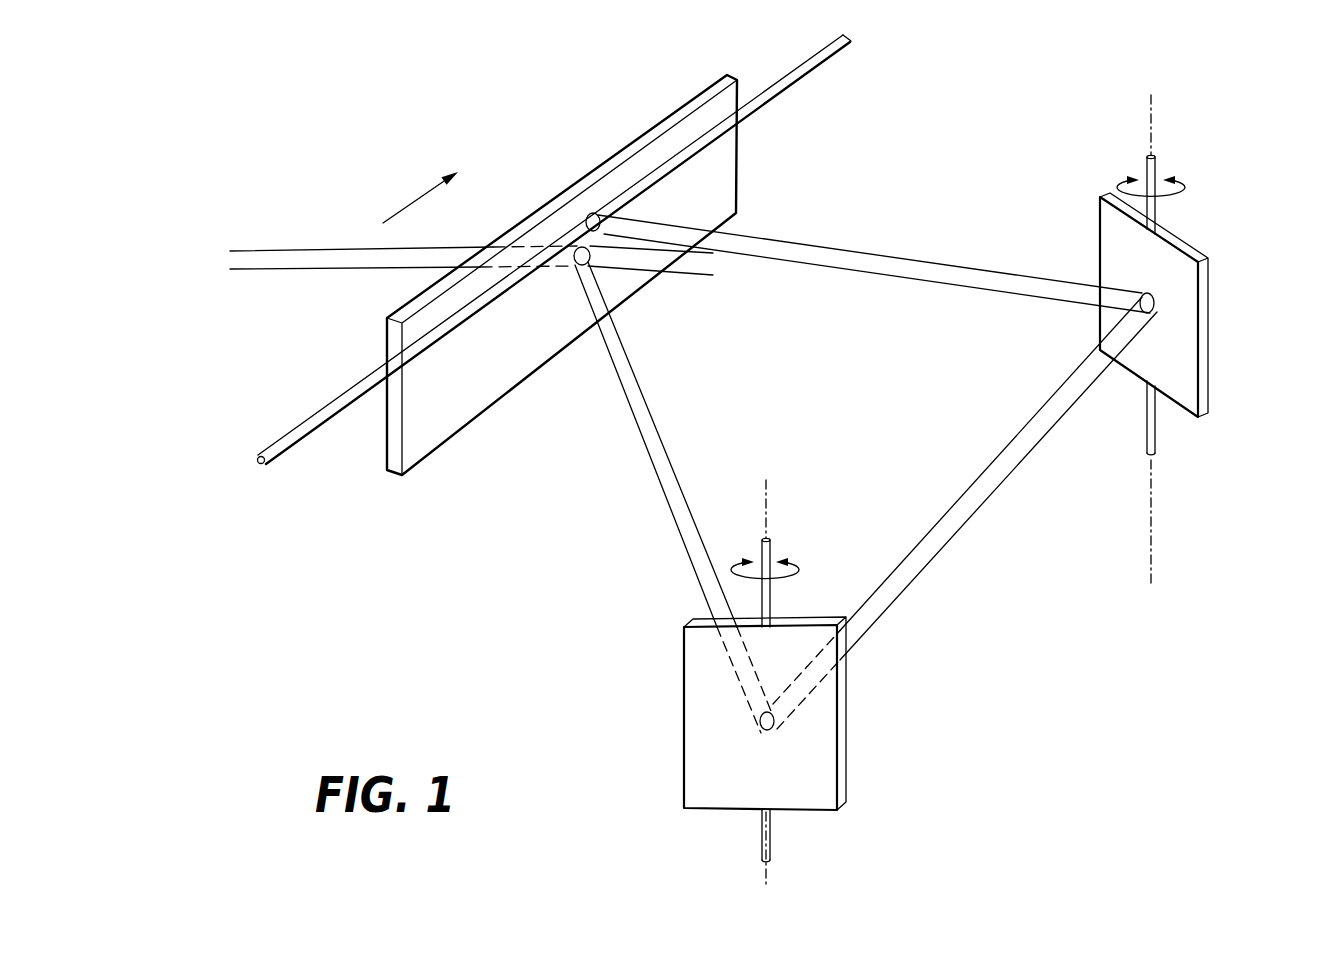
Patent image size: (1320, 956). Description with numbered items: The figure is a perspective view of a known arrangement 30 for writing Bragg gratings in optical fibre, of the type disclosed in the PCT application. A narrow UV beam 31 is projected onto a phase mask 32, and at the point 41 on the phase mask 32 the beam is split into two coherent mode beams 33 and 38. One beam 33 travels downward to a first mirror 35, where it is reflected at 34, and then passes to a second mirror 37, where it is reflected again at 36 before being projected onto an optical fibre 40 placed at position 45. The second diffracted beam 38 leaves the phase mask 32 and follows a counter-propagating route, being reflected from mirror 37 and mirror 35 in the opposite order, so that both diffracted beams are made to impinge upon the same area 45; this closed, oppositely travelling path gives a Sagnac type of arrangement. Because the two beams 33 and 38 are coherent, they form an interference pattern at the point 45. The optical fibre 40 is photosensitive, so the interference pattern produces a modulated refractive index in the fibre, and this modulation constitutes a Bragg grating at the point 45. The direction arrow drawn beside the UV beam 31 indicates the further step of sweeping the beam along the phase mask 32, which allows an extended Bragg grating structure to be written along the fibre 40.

The arrangement 30 is at (1093, 650).
The UV beam 31 is at (294, 250).
The phase mask 32 is at (418, 462).
The diffracted beam 33 is at (659, 428).
The reflection point on mirror 35 34 is at (973, 510).
The mirror 35 is at (684, 718).
The reflection point on mirror 37 36 is at (886, 254).
The mirror 37 is at (1192, 422).
The second diffracted beam 38 is at (636, 267).
The optical fibre 40 is at (808, 70).
The diffraction point 41 is at (568, 280).
The interference area 45 is at (592, 212).